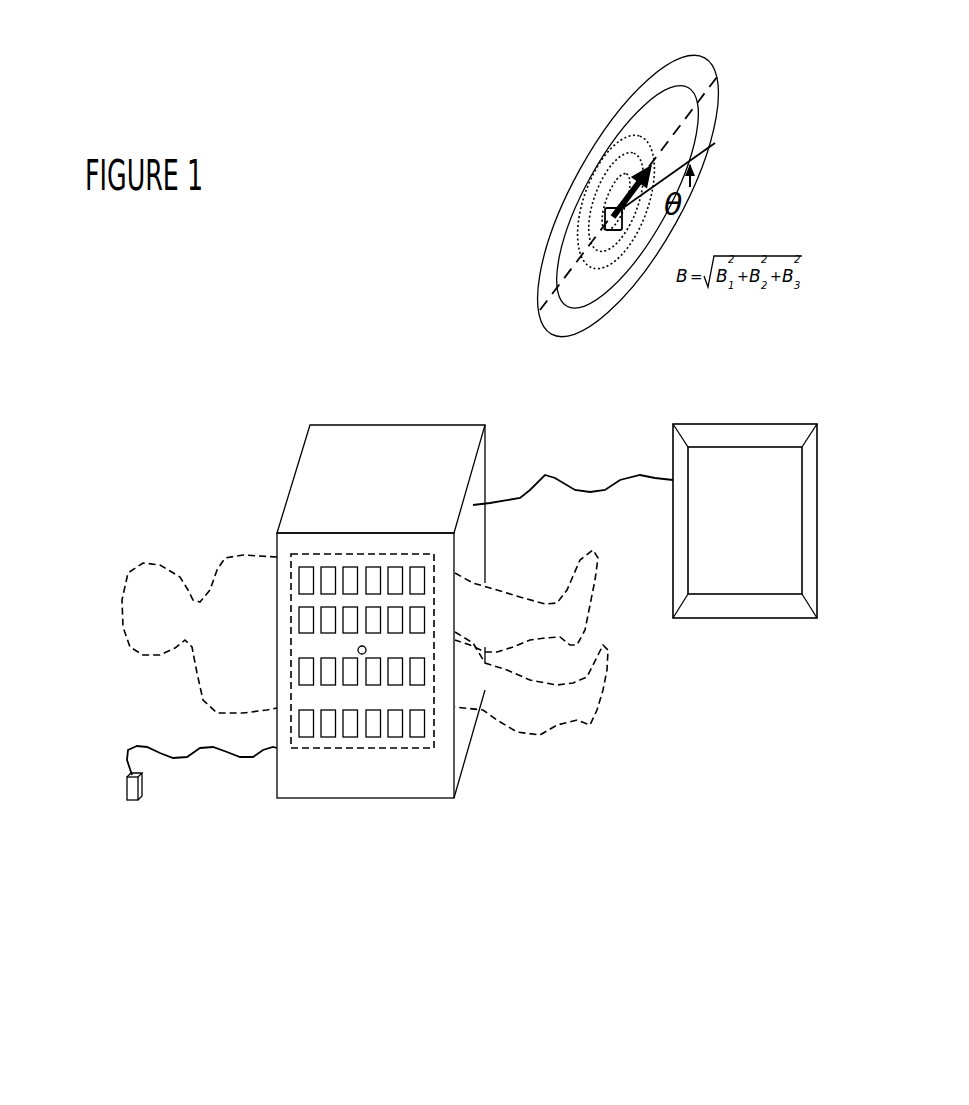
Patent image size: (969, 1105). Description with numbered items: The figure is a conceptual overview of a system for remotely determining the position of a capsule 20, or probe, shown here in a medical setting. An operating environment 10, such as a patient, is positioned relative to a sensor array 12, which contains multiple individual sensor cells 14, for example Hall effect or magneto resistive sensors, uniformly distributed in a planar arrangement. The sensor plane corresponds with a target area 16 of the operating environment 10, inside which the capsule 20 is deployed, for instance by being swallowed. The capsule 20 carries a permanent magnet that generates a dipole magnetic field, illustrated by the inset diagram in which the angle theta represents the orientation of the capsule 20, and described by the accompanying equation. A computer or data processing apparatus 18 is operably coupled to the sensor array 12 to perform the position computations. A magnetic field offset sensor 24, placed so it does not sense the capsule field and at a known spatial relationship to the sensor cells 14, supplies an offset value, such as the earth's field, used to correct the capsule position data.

The operating environment 10 is at (183, 510).
The sensor array 12 is at (365, 742).
The sensor cell 14 is at (418, 723).
The target area 16 is at (305, 752).
The computer or data processing apparatus 18 is at (687, 637).
The capsule 20 is at (365, 644).
The magnetic field offset sensor 24 is at (132, 803).